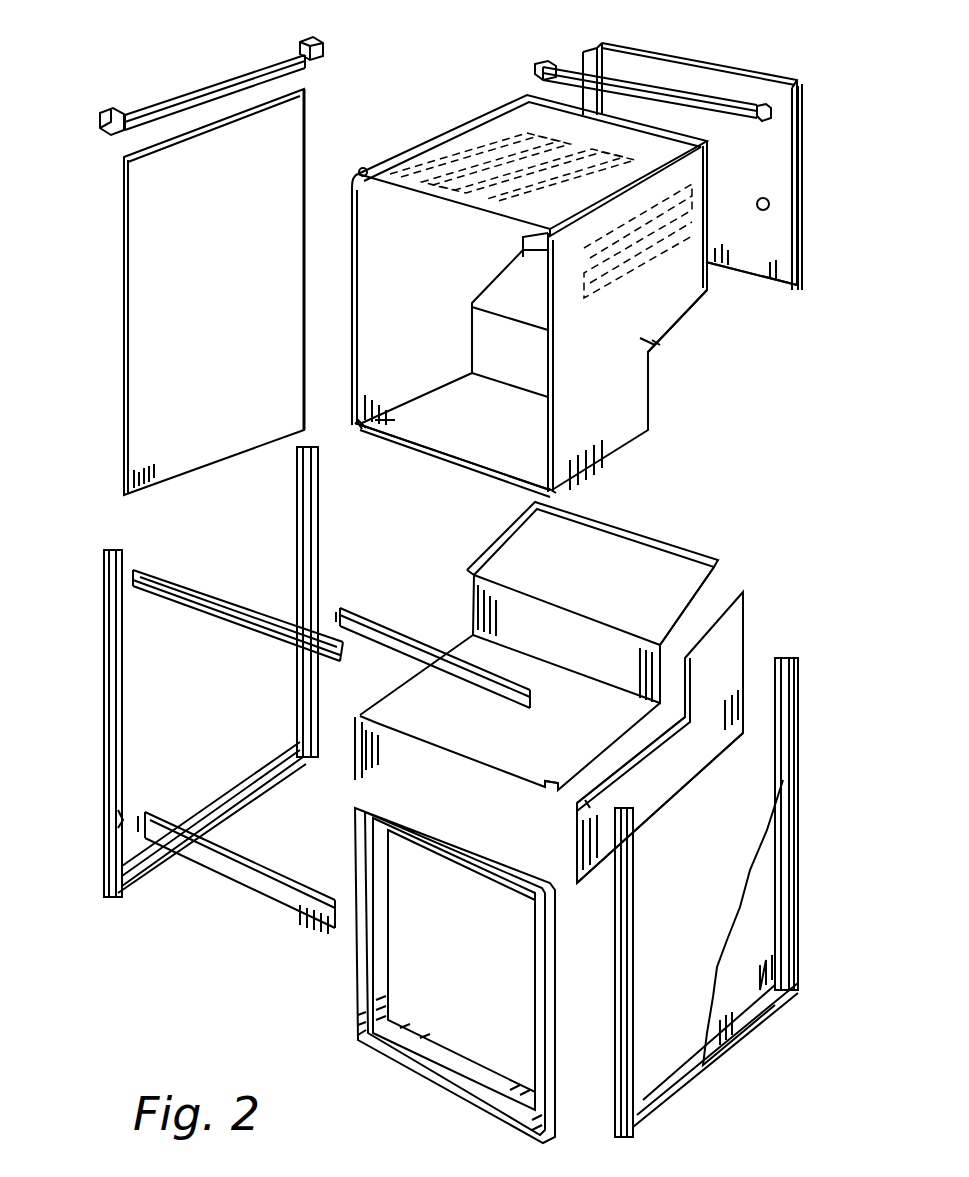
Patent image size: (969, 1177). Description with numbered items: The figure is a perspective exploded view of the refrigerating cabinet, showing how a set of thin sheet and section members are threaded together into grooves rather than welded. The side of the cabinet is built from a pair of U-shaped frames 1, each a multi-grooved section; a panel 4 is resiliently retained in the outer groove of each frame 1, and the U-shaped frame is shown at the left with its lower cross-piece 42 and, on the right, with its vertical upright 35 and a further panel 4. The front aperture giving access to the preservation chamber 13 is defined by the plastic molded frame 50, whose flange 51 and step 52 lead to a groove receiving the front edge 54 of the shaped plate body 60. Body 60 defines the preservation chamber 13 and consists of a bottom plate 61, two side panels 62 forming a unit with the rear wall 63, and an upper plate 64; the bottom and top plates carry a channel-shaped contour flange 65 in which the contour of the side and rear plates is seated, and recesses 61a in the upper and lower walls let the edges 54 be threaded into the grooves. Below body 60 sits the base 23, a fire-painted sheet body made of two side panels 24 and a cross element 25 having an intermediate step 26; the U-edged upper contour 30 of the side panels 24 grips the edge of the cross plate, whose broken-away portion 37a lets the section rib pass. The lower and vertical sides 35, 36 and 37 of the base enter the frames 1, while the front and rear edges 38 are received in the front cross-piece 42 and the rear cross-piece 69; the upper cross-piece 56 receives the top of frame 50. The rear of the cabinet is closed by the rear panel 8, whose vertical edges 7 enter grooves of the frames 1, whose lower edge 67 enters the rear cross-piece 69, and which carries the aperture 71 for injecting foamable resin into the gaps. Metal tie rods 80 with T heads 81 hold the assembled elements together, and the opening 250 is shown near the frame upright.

The U-shaped frame 1 is at (292, 505).
The panel 4 is at (296, 152).
The vertical edge 7 is at (600, 45).
The rear panel 8 is at (738, 70).
The preservation chamber 13 is at (356, 225).
The base 23 is at (575, 634).
The side panel 24 is at (550, 735).
The cross element 25 is at (582, 508).
The intermediate step 26 is at (490, 592).
The upper contour 30 is at (655, 745).
The vertical edge 35 is at (752, 658).
The lower edge 36 is at (660, 810).
The vertical edge 37 is at (575, 830).
The broken-away portion 37a is at (722, 560).
The front edge 38 is at (455, 760).
The lower cross-piece 42 is at (228, 895).
The frame 50 is at (440, 975).
The flange 51 is at (515, 890).
The step 52 is at (378, 930).
The front edge 54 is at (368, 200).
The upper cross-piece 56 is at (232, 600).
The shaped plate body 60 is at (507, 281).
The bottom plate 61 is at (415, 445).
The recess 61a is at (368, 450).
The side panel 62 is at (365, 318).
The rear wall 63 is at (540, 250).
The upper plate 64 is at (425, 160).
The contour flange 65 is at (360, 168).
The lower edge 67 is at (762, 270).
The rear cross-piece 69 is at (385, 612).
The aperture 71 is at (763, 198).
The tie rod 80 is at (205, 85).
The T head 81 is at (108, 112).
The frame hole 250 is at (128, 800).